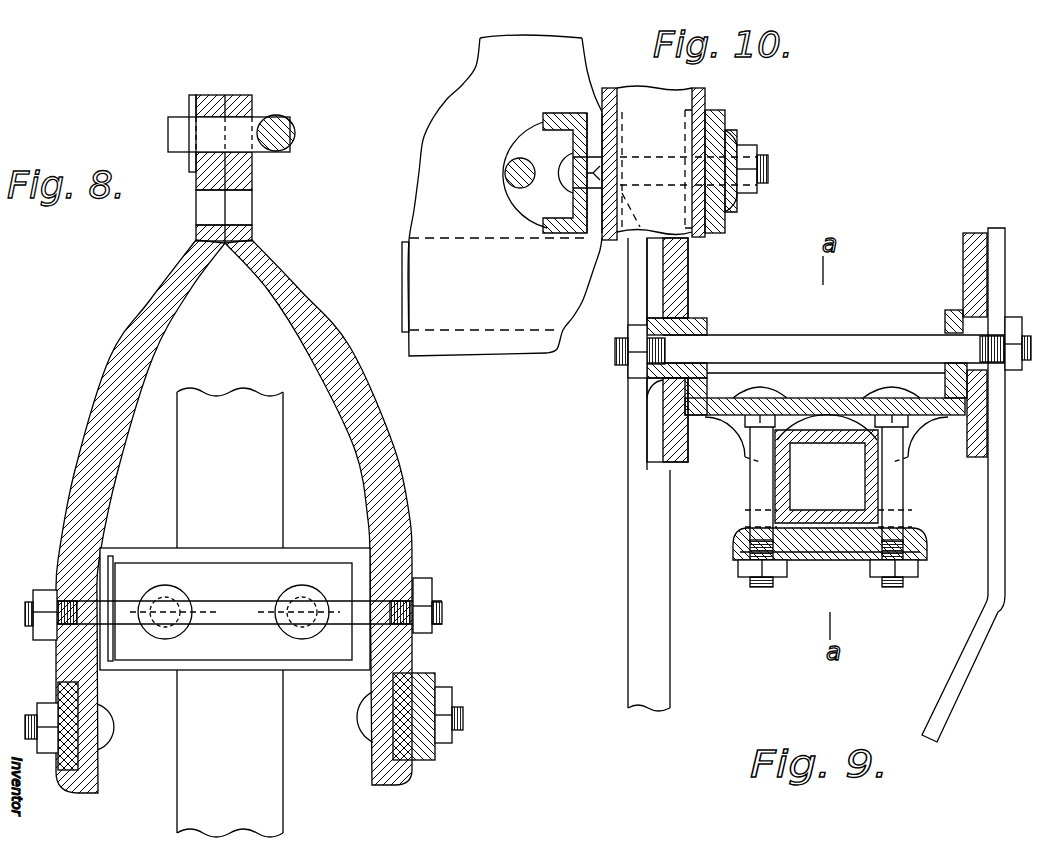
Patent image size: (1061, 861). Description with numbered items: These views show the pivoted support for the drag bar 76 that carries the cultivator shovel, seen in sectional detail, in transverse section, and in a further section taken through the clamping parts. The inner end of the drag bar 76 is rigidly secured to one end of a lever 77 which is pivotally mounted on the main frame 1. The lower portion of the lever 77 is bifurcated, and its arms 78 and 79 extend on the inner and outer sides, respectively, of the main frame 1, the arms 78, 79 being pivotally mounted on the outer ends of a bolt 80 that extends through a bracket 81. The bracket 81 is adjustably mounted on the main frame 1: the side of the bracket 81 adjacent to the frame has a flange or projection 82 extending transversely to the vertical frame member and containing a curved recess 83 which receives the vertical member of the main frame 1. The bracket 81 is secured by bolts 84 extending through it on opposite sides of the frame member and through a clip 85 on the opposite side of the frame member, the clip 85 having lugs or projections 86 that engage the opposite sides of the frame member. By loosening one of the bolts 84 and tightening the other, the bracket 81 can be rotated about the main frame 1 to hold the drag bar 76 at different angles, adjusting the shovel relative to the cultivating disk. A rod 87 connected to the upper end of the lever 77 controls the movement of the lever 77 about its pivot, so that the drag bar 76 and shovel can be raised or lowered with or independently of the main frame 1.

In FIG. 8, the main frame 1 is at (232, 390).
In FIG. 10, the main frame 1 is at (631, 90).
In FIG. 9, the main frame 1 is at (878, 481).
In FIG. 8, the drag bar 76 is at (58, 694).
In FIG. 9, the drag bar 76 is at (665, 670).
In FIG. 8, the lever 77 is at (253, 184).
In FIG. 10, the lever 77 is at (487, 70).
In FIG. 8, the arm 78 is at (408, 483).
In FIG. 9, the arm 78 is at (686, 281).
In FIG. 8, the arm 79 is at (110, 363).
In FIG. 10, the arm 79 is at (432, 183).
In FIG. 9, the arm 79 is at (965, 268).
In FIG. 8, the bolt 80 is at (227, 600).
In FIG. 10, the bolt 80 is at (504, 173).
In FIG. 9, the bolt 80 is at (822, 331).
In FIG. 8, the bracket 81 is at (107, 662).
In FIG. 10, the bracket 81 is at (582, 234).
In FIG. 9, the bracket 81 is at (707, 325).
In FIG. 9, the flange or projection 82 is at (915, 426).
In FIG. 9, the curved recess 83 is at (797, 432).
In FIG. 8, the bolts 84 is at (233, 609).
In FIG. 10, the bolts 84 is at (768, 172).
In FIG. 9, the bolts 84 is at (749, 494).
In FIG. 10, the clip 85 is at (718, 137).
In FIG. 9, the clip 85 is at (851, 558).
In FIG. 10, the lugs or projections 86 is at (710, 102).
In FIG. 9, the lugs or projections 86 is at (736, 522).
In FIG. 8, the rod 87 is at (292, 125).